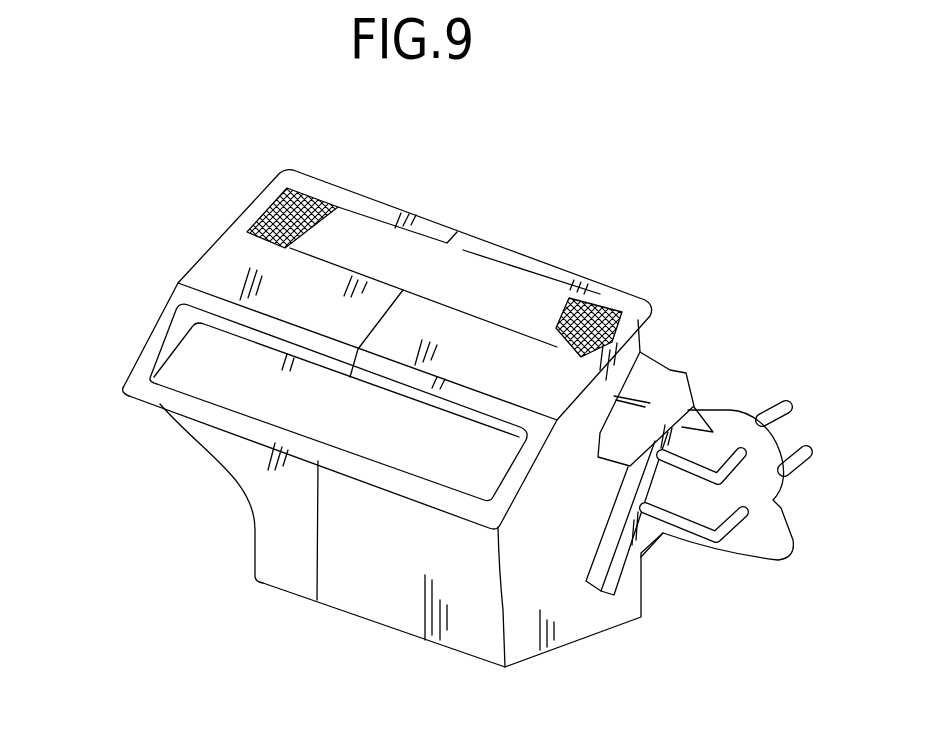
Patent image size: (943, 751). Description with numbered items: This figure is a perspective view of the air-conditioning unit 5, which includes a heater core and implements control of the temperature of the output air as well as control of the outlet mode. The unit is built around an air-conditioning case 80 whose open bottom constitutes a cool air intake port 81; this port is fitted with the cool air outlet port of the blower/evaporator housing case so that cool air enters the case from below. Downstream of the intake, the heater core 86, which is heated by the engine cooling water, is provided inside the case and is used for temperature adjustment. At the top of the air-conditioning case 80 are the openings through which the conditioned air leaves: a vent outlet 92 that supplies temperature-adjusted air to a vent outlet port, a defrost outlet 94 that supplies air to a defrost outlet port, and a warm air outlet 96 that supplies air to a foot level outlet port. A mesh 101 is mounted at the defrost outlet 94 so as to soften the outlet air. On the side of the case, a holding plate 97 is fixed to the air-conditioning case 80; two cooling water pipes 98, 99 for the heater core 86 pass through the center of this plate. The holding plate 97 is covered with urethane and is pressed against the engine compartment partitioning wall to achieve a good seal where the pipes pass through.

The air-conditioning unit 5 is at (146, 271).
The air-conditioning case 80 is at (277, 548).
The cool air intake port 81 is at (445, 648).
The heater core 86 is at (620, 565).
The vent outlet 92 is at (208, 390).
The defrost outlet 94 is at (546, 282).
The warm air outlet 96 is at (672, 390).
The holding plate 97 is at (767, 538).
The cooling water pipe 98 is at (779, 404).
The cooling water pipe 99 is at (798, 452).
The mesh 101 is at (308, 198).